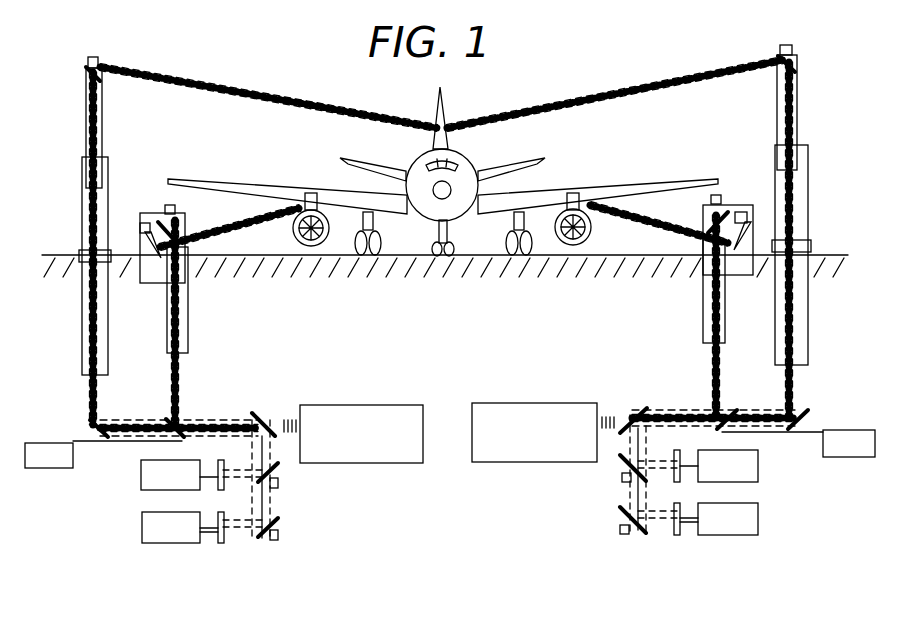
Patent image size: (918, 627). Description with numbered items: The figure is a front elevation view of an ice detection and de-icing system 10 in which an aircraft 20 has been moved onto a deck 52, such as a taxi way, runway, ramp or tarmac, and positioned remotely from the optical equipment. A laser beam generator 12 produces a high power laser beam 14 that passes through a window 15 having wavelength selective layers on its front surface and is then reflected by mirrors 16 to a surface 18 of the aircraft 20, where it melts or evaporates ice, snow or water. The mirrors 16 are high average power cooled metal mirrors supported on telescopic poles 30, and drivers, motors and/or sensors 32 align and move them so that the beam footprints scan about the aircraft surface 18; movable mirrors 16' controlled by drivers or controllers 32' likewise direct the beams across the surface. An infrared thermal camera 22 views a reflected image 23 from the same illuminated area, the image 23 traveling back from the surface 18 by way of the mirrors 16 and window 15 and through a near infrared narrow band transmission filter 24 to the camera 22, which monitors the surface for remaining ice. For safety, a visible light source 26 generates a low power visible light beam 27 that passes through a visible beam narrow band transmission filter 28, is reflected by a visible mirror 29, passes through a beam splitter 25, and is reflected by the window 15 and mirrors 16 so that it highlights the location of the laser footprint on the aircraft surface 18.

The ice detection and de-icing system 10 is at (374, 548).
The laser beam generator 12 is at (392, 463).
The laser beam 14 is at (290, 418).
The window 15 is at (255, 410).
The mirrors 16 is at (443, 245).
The movable mirrors 16' is at (454, 409).
The aircraft surface 18 is at (447, 110).
The aircraft 20 is at (564, 180).
The infrared thermal camera 22 is at (141, 483).
The reflected image 23 is at (215, 462).
The near infrared narrow band transmission filter 24 is at (215, 490).
The beam splitter 25 is at (277, 470).
The visible light source 26 is at (142, 533).
The visible light beam 27 is at (213, 535).
The visible beam narrow band transmission filter 28 is at (225, 543).
The visible mirror 29 is at (265, 540).
The telescopic poles 30 is at (84, 120).
The drivers, motors and/or sensors 32 is at (443, 284).
The drivers or controllers 32' is at (451, 476).
The deck 52 is at (470, 254).